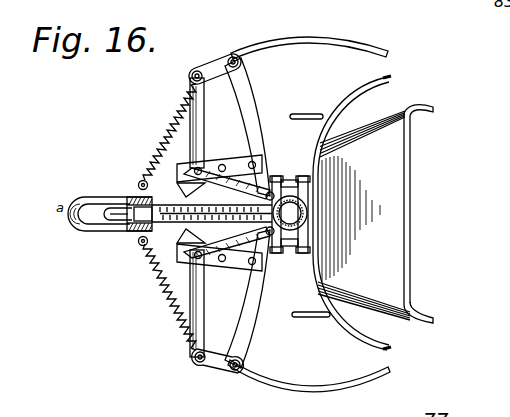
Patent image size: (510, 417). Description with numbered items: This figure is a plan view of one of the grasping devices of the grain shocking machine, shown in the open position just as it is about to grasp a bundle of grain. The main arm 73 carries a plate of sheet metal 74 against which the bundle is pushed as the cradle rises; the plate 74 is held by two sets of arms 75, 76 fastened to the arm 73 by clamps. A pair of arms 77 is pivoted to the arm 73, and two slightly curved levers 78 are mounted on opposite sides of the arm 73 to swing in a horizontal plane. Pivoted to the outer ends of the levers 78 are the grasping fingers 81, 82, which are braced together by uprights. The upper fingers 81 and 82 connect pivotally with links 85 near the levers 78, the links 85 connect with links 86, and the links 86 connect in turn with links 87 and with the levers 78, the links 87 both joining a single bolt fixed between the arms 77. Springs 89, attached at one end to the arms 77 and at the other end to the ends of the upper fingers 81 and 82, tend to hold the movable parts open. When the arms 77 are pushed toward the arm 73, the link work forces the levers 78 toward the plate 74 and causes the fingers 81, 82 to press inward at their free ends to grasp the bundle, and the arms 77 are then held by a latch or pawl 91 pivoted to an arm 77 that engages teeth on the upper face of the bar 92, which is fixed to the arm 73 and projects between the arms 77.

The arm 73 is at (361, 213).
The plate of sheet metal 74 is at (403, 110).
The arms 75 is at (390, 349).
The arms 76 is at (308, 318).
The arms 77 is at (58, 220).
The levers 78 is at (240, 117).
The grasping fingers 81 is at (340, 387).
The grasping fingers 82 is at (343, 39).
The links 85 is at (192, 125).
The links 86 is at (200, 167).
The links 87 is at (223, 213).
The springs 89 is at (160, 158).
The latch or pawl 91 is at (110, 208).
The bar 92 is at (148, 186).